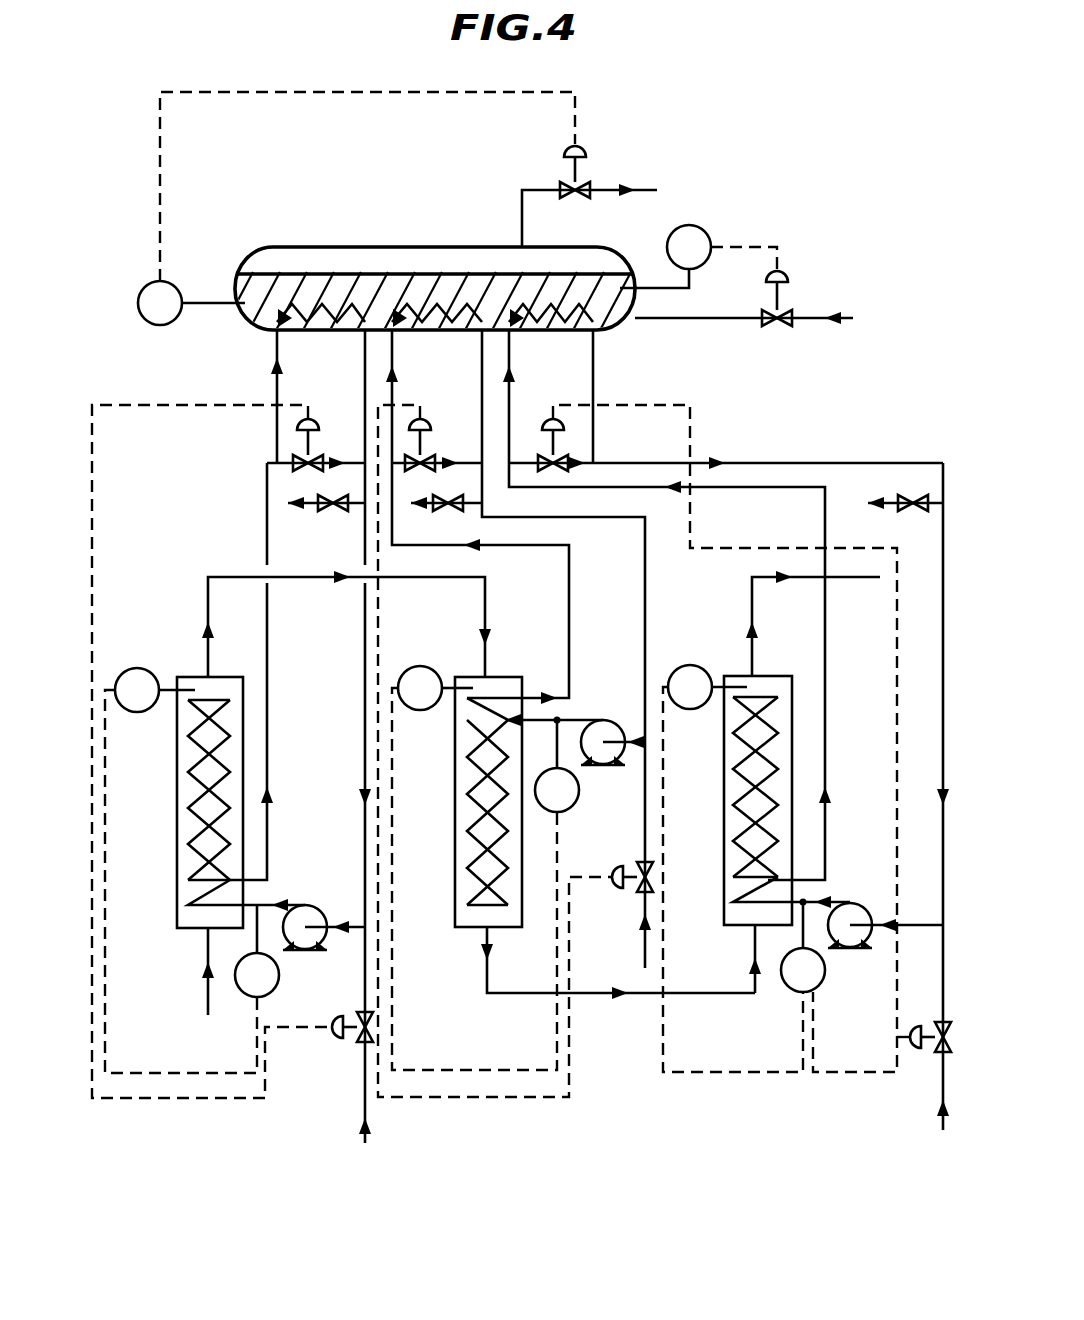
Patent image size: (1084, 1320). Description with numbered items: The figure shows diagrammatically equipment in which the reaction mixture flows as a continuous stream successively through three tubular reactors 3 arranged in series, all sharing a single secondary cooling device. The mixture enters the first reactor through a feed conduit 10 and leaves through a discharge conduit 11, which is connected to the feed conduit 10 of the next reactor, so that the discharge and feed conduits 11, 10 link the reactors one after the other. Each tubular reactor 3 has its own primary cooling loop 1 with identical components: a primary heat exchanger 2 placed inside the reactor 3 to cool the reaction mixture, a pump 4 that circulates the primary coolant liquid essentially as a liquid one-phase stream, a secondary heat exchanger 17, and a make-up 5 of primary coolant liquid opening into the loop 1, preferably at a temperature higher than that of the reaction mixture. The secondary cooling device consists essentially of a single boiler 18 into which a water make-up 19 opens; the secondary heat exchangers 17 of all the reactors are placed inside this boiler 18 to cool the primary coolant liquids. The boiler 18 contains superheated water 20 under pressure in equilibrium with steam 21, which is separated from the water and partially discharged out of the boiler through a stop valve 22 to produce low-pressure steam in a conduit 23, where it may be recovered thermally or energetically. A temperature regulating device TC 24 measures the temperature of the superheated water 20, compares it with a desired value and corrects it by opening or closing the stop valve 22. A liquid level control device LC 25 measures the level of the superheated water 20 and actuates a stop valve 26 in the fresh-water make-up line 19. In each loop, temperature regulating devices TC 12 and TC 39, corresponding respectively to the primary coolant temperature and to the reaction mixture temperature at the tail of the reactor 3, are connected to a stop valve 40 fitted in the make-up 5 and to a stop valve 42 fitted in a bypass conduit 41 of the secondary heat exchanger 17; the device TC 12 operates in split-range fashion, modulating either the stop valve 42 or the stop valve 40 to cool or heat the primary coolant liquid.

The primary cooling loop 1 is at (262, 465).
The primary heat exchanger 2 is at (190, 770).
The tubular reactor 3 is at (177, 830).
The pump 4 is at (312, 952).
The make-up of primary coolant liquid 5 is at (365, 1102).
The feed conduit 10 is at (485, 605).
The discharge conduit 11 is at (208, 577).
The temperature regulating device TC 12 is at (250, 1000).
The secondary heat exchanger 17 is at (290, 330).
The boiler 18 is at (625, 262).
The water make-up 19 is at (810, 322).
The superheated water 20 is at (247, 288).
The steam 21 is at (311, 258).
The stop valve 22 is at (566, 180).
The conduit 23 is at (655, 190).
The temperature regulating device TC 24 is at (156, 281).
The liquid level control device LC 25 is at (707, 233).
The stop valve 26 is at (786, 280).
The temperature regulating device TC 39 is at (148, 668).
The stop valve 40 is at (337, 1030).
The bypass conduit 41 is at (328, 462).
The stop valve 42 is at (312, 418).